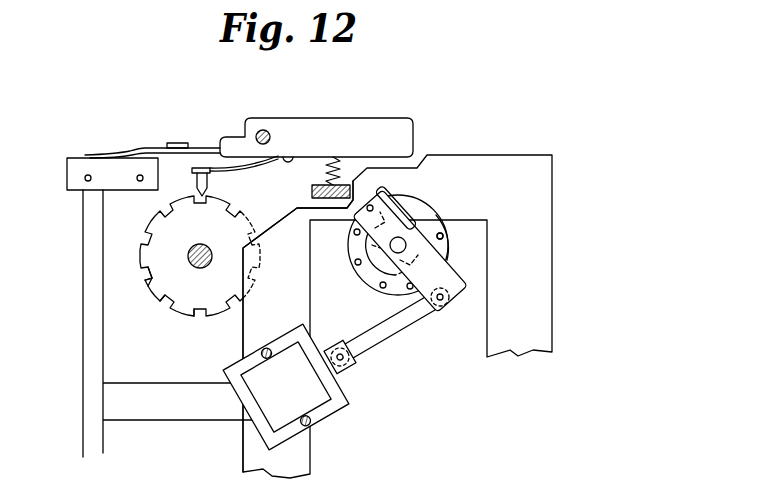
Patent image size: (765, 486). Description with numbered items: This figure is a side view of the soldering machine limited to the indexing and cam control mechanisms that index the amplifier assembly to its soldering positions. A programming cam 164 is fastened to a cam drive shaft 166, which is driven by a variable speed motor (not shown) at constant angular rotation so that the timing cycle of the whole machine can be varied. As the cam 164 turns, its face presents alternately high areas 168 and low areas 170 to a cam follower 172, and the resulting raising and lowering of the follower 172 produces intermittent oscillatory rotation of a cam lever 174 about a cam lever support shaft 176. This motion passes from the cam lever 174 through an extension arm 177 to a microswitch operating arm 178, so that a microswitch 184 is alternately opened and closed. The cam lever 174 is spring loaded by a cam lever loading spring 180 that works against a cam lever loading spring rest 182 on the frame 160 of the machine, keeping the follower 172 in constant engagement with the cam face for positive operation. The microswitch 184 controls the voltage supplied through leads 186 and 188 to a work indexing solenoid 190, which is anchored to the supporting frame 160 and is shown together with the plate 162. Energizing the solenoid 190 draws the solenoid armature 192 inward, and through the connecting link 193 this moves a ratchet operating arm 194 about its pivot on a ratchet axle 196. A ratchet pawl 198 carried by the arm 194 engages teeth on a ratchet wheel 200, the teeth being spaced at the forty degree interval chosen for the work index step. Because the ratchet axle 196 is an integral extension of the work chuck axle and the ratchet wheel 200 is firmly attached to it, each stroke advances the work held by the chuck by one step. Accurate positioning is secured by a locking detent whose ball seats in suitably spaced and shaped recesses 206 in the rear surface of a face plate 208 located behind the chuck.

The frame 160 is at (540, 175).
The mounting plate 162 is at (300, 193).
The programming cam 164 is at (222, 299).
The cam drive shaft 166 is at (192, 250).
The high areas 168 is at (141, 265).
The low areas 170 is at (152, 284).
The cam follower 172 is at (203, 176).
The cam lever 174 is at (345, 127).
The cam lever support shaft 176 is at (267, 131).
The extension arm 177 is at (180, 143).
The microswitch operating arm 178 is at (143, 148).
The cam lever loading spring 180 is at (340, 170).
The cam lever loading spring rest 182 is at (348, 184).
The microswitch 184 is at (73, 172).
The lead 186 is at (83, 437).
The lead 188 is at (103, 440).
The work indexing solenoid 190 is at (304, 394).
The solenoid armature 192 is at (352, 365).
The connecting link 193 is at (402, 322).
The ratchet operating arm 194 is at (425, 270).
The ratchet axle 196 is at (447, 226).
The ratchet pawl 198 is at (402, 202).
The ratchet wheel 200 is at (404, 240).
The recesses 206 is at (356, 236).
The face plate 208 is at (447, 240).